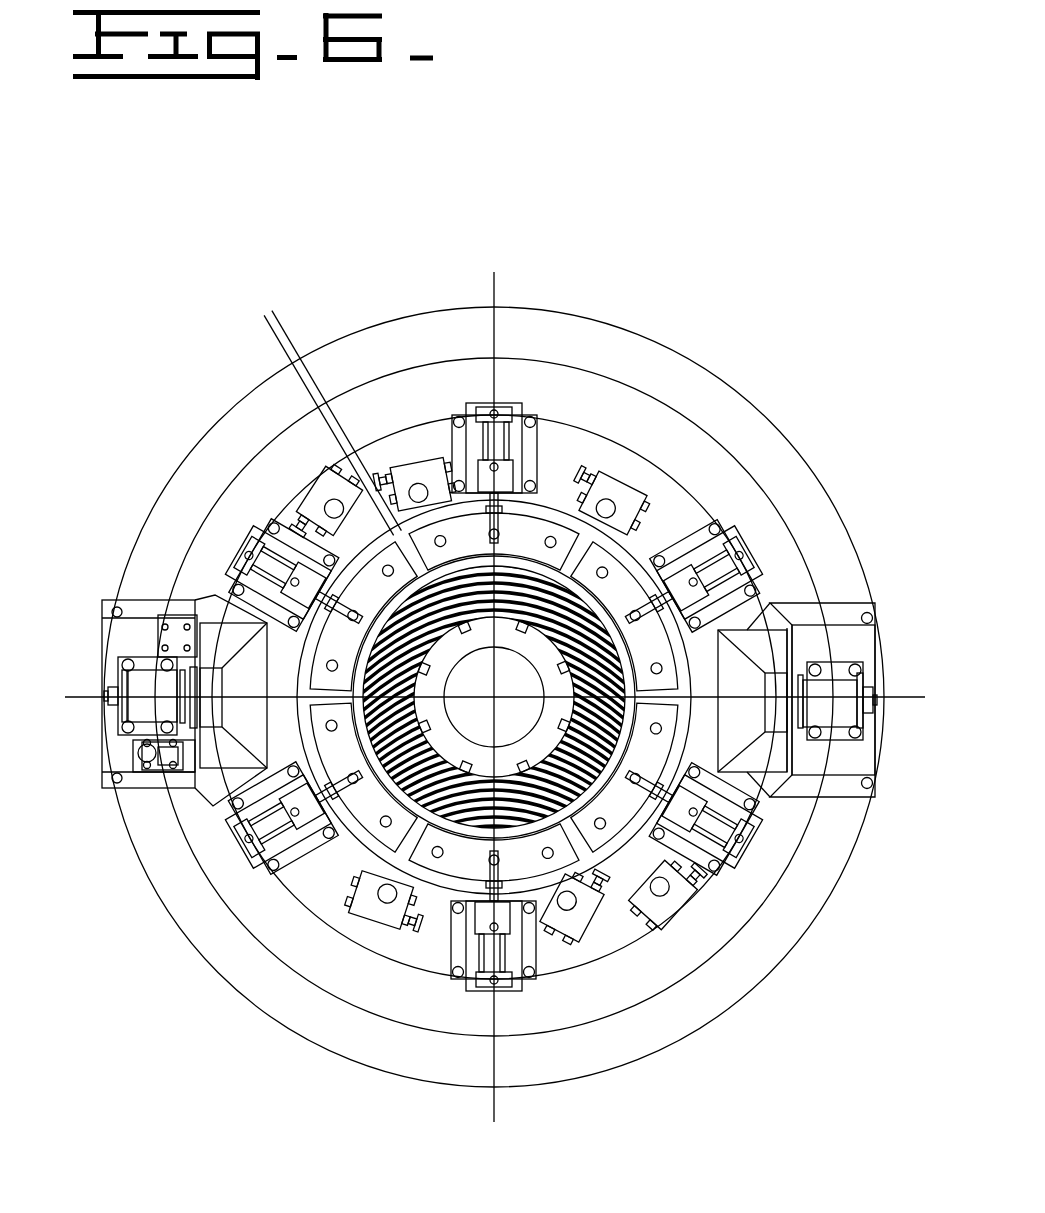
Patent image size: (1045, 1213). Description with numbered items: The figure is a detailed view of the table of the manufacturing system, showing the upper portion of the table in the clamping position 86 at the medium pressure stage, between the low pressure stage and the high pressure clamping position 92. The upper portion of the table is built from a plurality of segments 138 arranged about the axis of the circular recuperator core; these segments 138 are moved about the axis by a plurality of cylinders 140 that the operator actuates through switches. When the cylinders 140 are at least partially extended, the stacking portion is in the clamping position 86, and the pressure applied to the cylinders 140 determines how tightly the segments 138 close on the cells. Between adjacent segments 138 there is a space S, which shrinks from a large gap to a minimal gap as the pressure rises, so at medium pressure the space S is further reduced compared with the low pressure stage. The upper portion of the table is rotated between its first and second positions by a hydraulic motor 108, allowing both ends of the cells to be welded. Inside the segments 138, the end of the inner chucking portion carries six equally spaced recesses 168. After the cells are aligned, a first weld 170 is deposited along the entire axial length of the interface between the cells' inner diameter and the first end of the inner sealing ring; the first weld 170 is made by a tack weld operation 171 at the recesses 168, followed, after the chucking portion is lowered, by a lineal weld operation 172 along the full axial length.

The clamping position 86 is at (387, 210).
The high pressure clamping position 92 is at (176, 440).
The hydraulic motor 108 is at (140, 712).
The segments 138 is at (543, 520).
The cylinders 140 is at (495, 404).
The recesses 168 is at (420, 724).
The first weld 170 is at (483, 777).
The tack weld operation 171 is at (585, 735).
The lineal weld operation 172 is at (538, 777).
The space S is at (237, 357).